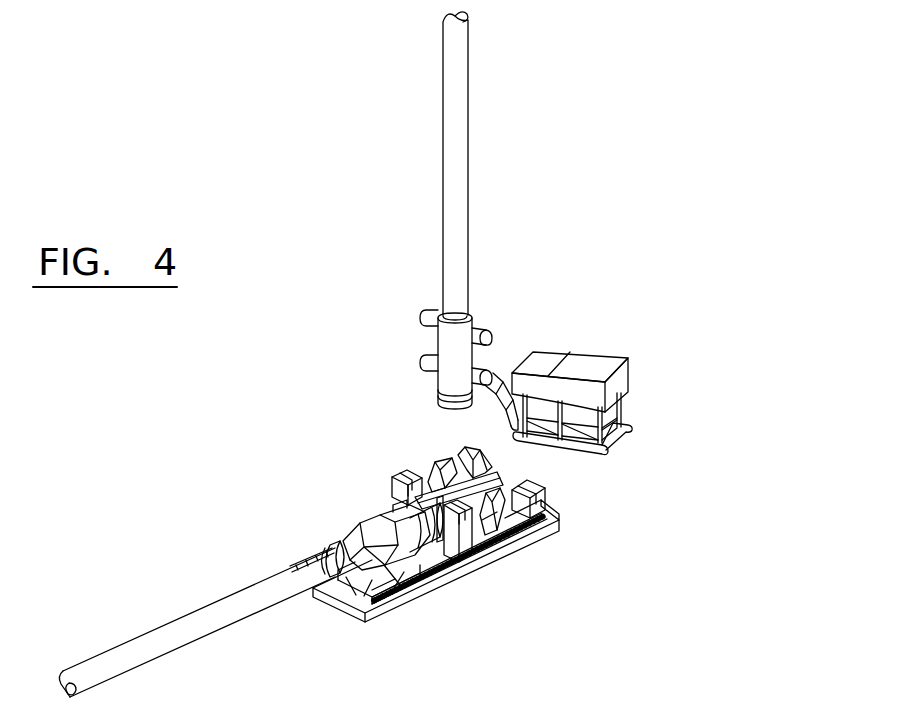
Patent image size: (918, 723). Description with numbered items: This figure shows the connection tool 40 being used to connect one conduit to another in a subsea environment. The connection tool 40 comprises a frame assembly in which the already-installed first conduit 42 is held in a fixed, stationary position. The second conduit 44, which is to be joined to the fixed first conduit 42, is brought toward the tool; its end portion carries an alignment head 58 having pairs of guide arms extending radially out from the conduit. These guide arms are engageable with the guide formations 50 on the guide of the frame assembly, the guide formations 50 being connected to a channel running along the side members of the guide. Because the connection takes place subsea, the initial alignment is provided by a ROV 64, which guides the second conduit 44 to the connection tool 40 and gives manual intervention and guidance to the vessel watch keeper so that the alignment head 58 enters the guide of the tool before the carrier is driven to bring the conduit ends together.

The connection tool 40 is at (462, 588).
The first conduit 42 is at (133, 655).
The second conduit 44 is at (453, 143).
The first pair of guide formations 50 is at (515, 528).
The alignment head 58 is at (437, 340).
The ROV 64 is at (545, 362).